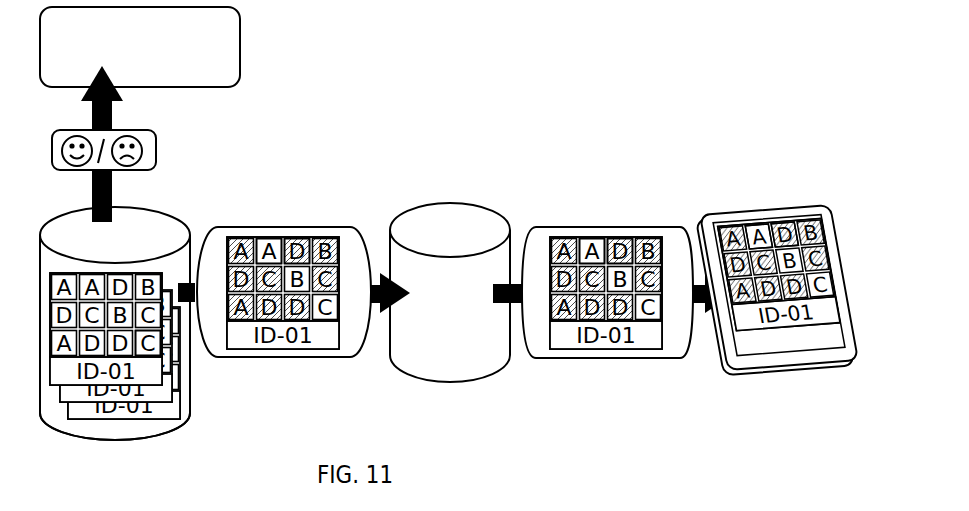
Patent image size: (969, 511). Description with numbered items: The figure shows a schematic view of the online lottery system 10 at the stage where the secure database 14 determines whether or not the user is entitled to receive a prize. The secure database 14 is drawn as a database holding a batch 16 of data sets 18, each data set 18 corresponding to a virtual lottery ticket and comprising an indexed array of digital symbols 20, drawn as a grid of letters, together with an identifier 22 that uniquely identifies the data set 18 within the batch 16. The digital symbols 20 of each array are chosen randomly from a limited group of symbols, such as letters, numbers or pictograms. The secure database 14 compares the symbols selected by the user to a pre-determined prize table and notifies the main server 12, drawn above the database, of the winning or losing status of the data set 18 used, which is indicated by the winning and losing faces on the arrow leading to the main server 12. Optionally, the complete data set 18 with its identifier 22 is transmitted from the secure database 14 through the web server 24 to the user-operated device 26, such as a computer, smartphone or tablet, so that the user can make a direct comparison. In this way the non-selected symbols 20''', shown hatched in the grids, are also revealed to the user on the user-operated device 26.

The online lottery system 10 is at (845, 114).
The main server 12 is at (240, 48).
The secure database 14 is at (168, 212).
The batch 16 is at (50, 420).
The data set 18 is at (78, 420).
The digital symbols 20 is at (468, 330).
The non-selected symbols 20''' is at (565, 216).
The identifier 22 is at (147, 377).
The web server 24 is at (496, 210).
The user-operated device 26 is at (700, 218).